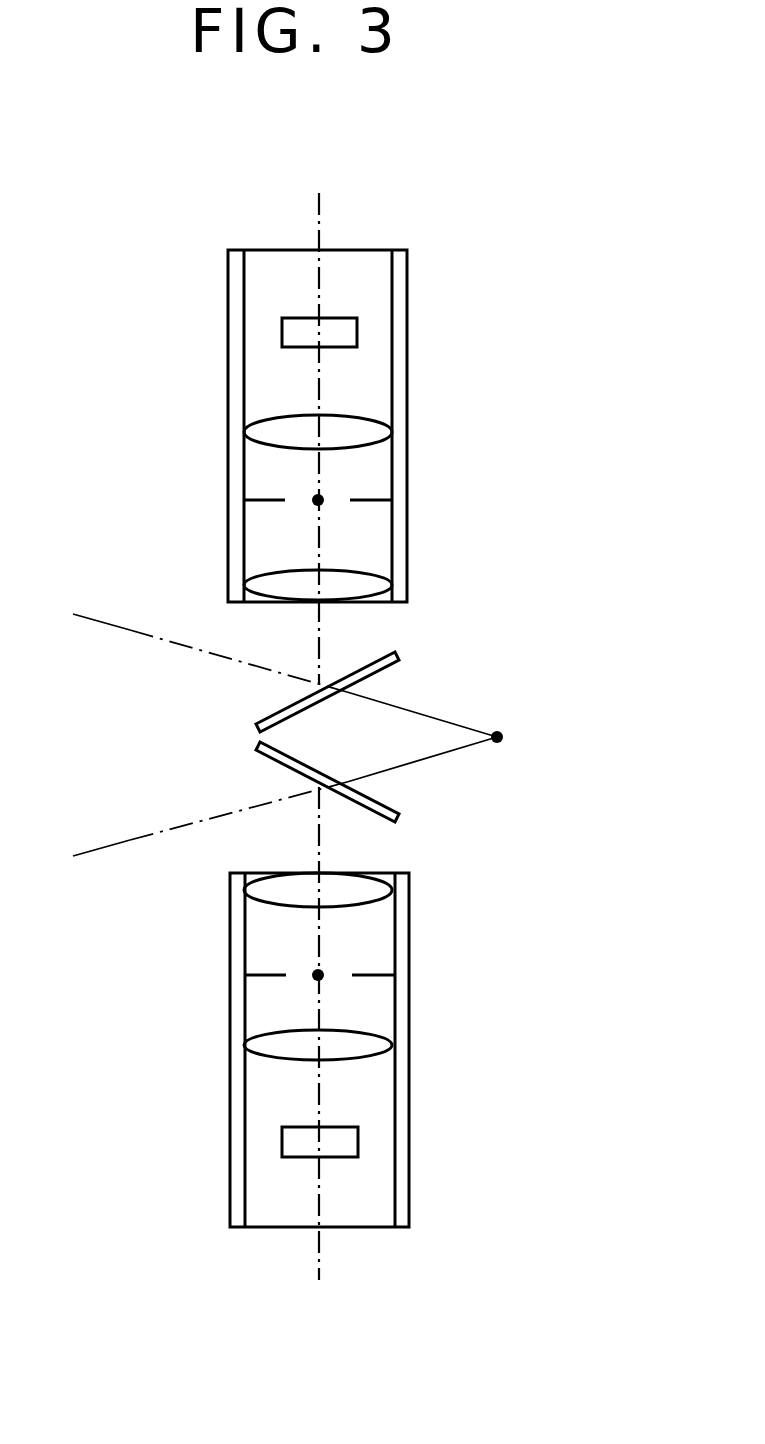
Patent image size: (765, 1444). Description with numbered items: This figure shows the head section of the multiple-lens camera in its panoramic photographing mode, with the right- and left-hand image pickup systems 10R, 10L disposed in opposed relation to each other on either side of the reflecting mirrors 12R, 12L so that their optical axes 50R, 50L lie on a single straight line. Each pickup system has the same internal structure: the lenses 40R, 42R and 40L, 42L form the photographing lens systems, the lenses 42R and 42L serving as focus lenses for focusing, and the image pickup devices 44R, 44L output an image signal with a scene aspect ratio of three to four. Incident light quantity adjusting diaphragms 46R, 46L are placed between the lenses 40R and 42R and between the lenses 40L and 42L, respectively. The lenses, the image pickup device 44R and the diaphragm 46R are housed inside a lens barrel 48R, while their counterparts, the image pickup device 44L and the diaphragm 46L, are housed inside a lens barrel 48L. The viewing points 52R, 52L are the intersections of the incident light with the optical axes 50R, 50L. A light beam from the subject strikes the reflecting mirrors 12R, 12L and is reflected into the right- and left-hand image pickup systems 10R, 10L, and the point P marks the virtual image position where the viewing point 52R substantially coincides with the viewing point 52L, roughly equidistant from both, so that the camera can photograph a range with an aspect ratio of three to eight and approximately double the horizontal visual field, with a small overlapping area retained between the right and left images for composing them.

The right-hand image pickup system 10R is at (525, 375).
The left-hand image pickup system 10L is at (500, 1032).
The reflecting mirror 12R is at (400, 656).
The reflecting mirror 12L is at (400, 818).
The lens 40R is at (265, 585).
The lens 40L is at (265, 893).
The focus lens 42R is at (262, 436).
The focus lens 42L is at (262, 1050).
The image pickup device 44R is at (340, 330).
The image pickup device 44L is at (337, 1148).
The incident light quantity adjusting diaphragm 46R is at (370, 502).
The incident light quantity adjusting diaphragm 46L is at (372, 978).
The lens barrel 48R is at (398, 280).
The lens barrel 48L is at (409, 1155).
The optical axis 50R is at (118, 630).
The optical axis 50L is at (112, 840).
The viewing point 52R is at (350, 487).
The viewing point 52L is at (343, 951).
The virtual image position P is at (443, 737).